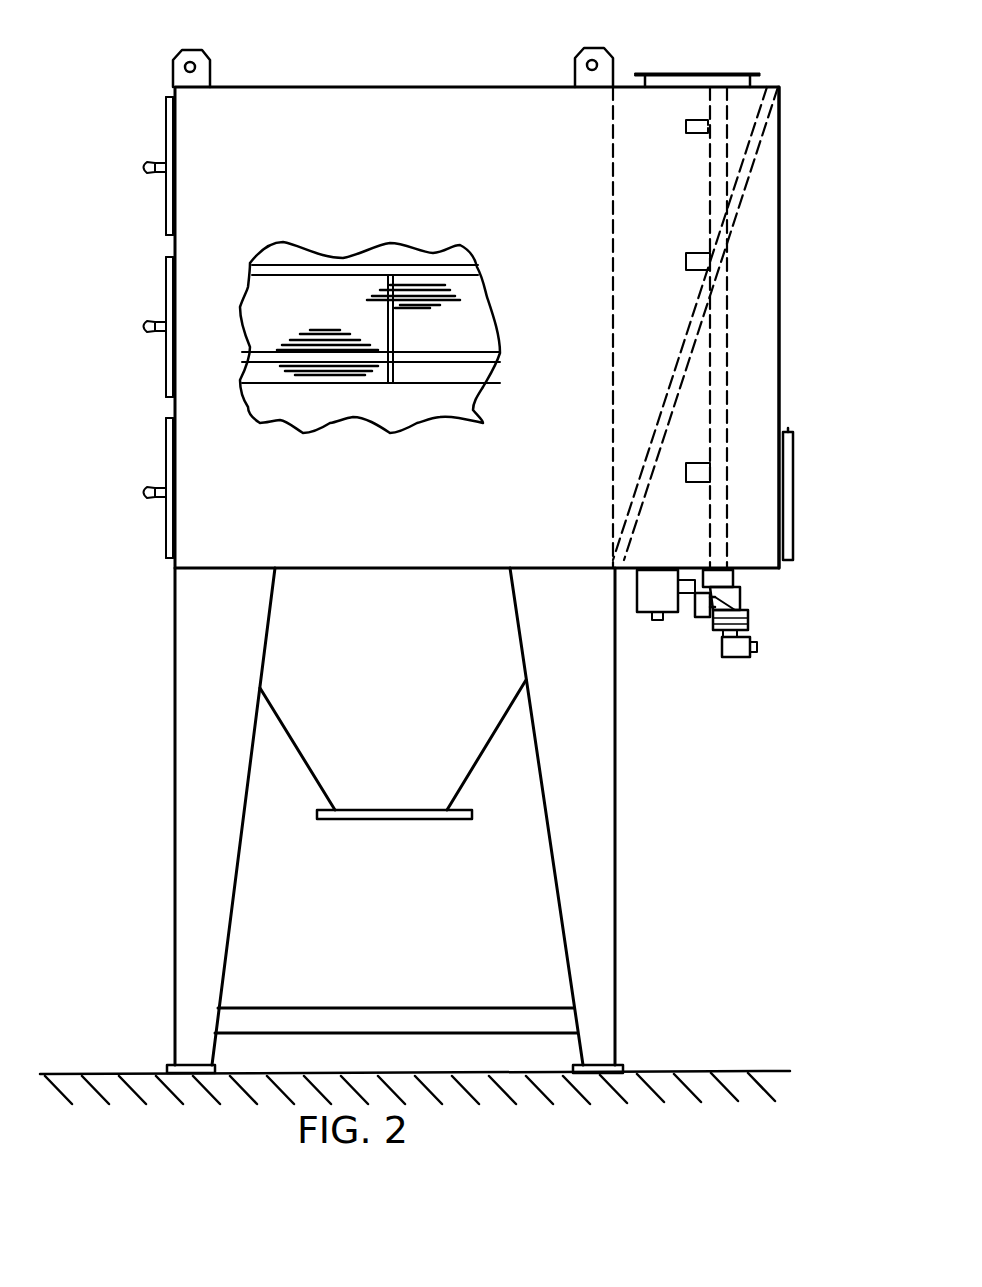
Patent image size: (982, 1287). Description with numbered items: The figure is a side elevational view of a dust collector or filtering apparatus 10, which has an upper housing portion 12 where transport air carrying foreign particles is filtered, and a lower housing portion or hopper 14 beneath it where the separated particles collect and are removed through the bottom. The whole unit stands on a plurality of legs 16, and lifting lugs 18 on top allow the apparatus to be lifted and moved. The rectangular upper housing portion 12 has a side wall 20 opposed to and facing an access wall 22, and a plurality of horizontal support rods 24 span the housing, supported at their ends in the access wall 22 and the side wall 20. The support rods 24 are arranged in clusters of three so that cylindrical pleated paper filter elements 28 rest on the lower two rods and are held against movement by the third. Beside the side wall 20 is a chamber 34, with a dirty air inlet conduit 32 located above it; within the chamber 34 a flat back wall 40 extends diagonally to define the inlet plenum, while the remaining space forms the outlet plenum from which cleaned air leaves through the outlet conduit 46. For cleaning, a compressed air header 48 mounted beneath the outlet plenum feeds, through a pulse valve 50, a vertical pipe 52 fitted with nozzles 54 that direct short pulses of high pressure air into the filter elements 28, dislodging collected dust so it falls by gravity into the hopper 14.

The filtering apparatus 10 is at (790, 128).
The upper housing portion 12 is at (432, 87).
The hopper 14 is at (410, 793).
The legs 16 is at (607, 830).
The lifting lugs 18 is at (613, 56).
The side wall 20 is at (614, 122).
The access wall 22 is at (168, 252).
The support rods 24 is at (415, 272).
The filter element 28 is at (292, 318).
The dirty air inlet conduit 32 is at (730, 70).
The chamber 34 is at (780, 250).
The flat back wall 40 is at (712, 253).
The outlet conduit 46 is at (790, 432).
The compressed air header 48 is at (650, 600).
The pulse valve 50 is at (748, 612).
The vertical pipe 52 is at (730, 528).
The nozzles 54 is at (712, 455).